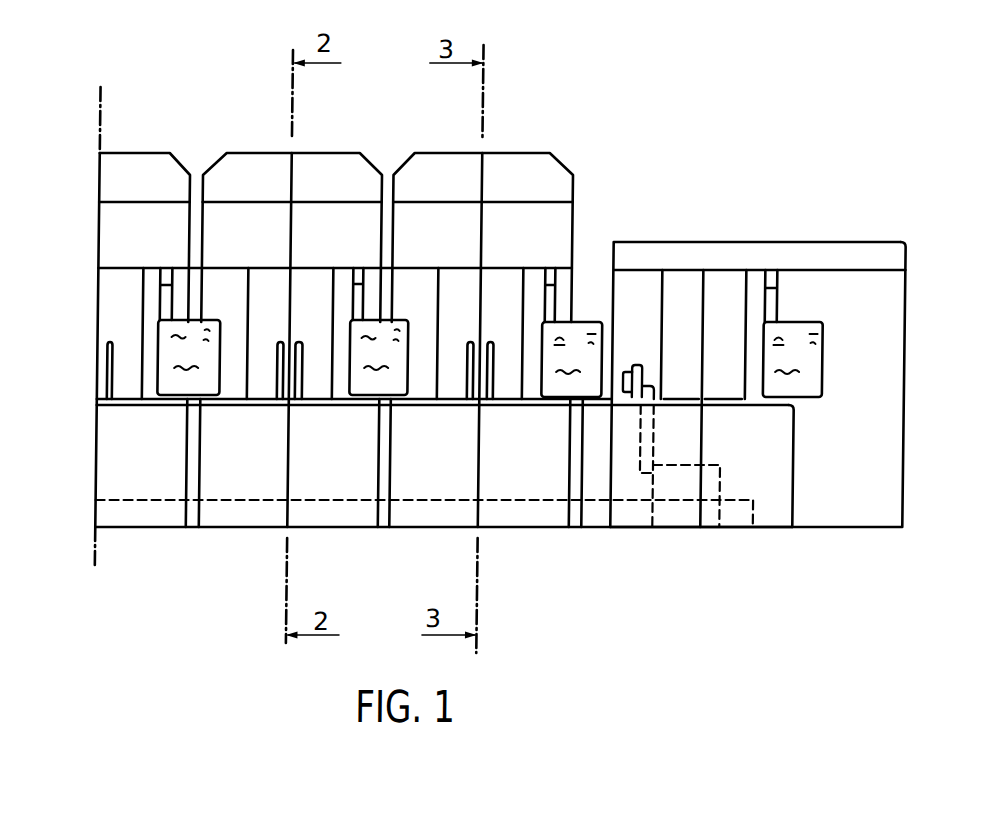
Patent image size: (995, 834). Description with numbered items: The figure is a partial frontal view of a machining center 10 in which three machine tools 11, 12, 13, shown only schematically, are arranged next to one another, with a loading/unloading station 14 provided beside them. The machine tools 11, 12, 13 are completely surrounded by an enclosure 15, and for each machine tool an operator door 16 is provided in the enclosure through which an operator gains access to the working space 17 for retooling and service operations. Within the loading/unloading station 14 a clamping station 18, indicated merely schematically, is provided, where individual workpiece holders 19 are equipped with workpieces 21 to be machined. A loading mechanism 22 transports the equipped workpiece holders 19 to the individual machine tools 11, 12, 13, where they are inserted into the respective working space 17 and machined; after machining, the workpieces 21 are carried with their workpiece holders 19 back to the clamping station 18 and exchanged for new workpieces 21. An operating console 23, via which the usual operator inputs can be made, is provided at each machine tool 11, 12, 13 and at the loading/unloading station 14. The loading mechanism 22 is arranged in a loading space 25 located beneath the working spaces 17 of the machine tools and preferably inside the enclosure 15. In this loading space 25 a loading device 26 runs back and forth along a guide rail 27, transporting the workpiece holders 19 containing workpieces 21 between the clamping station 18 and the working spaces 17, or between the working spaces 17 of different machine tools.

The machining center 10 is at (551, 110).
The machine tool 11 is at (432, 177).
The machine tool 12 is at (236, 173).
The machine tool 13 is at (148, 177).
The loading/unloading station 14 is at (782, 258).
The enclosure 15 is at (260, 452).
The operator door 16 is at (508, 298).
The working space 17 is at (492, 284).
The clamping station 18 is at (644, 343).
The workpiece holder 19 is at (635, 405).
The workpiece 21 is at (624, 391).
The loading mechanism 22 is at (700, 545).
The operating console 23 is at (816, 362).
The loading space 25 is at (125, 433).
The loading device 26 is at (680, 513).
The guide rail 27 is at (160, 505).